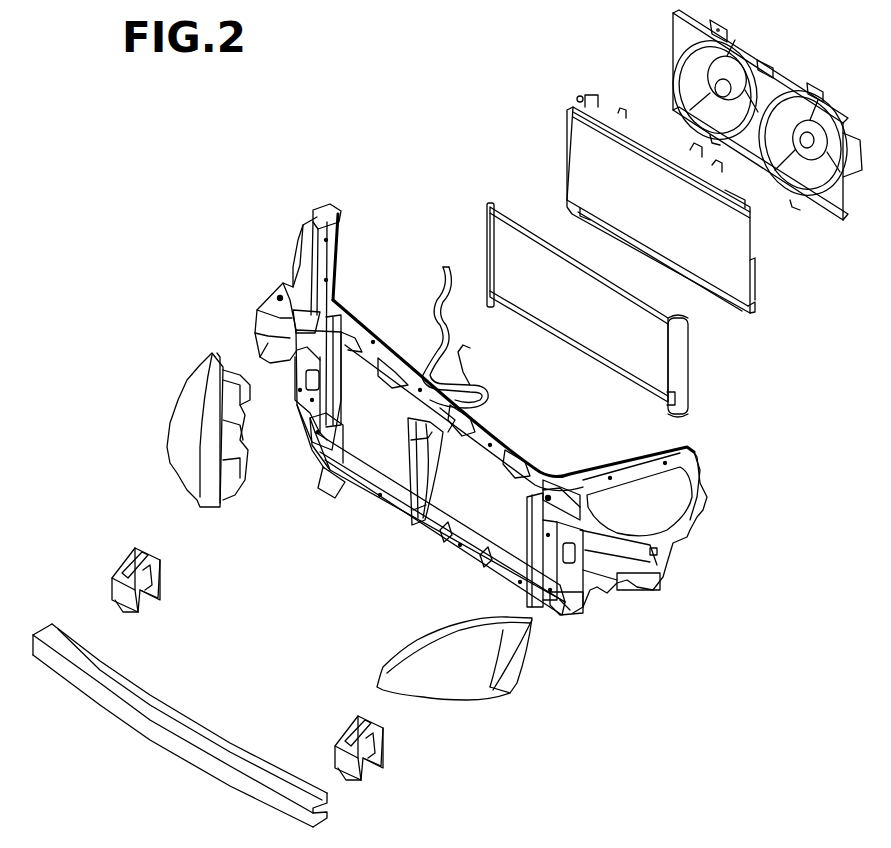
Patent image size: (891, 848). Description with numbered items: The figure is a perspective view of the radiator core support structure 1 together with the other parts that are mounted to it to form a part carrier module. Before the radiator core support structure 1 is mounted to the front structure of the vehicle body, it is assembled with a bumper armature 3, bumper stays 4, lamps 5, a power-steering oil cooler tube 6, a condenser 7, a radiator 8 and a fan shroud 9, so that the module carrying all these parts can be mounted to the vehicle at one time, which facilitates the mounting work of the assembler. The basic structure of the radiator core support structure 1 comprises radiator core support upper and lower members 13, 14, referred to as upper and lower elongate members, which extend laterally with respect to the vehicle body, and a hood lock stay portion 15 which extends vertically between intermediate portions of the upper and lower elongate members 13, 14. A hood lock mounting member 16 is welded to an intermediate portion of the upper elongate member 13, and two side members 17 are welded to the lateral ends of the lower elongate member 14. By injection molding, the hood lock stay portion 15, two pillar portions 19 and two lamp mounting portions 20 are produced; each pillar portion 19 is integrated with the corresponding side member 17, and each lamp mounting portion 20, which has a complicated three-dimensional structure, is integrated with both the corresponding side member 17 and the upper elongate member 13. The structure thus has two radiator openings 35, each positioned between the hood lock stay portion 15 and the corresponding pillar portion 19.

The radiator core support structure 1 is at (282, 228).
The bumper armature 3 is at (190, 715).
The bumper stays 4 is at (122, 560).
The lamps 5 is at (172, 408).
The power-steering oil cooler tube 6 is at (480, 383).
The condenser 7 is at (487, 247).
The radiator 8 is at (577, 158).
The fan shroud 9 is at (670, 60).
The radiator core support upper member 13 is at (508, 448).
The radiator core support lower member 14 is at (455, 535).
The hood lock stay portion 15 is at (418, 487).
The hood lock mounting member 16 is at (455, 418).
The side members 17 is at (303, 395).
The pillar portions 19 is at (345, 400).
The lamp mounting portions 20 is at (283, 285).
The radiator openings 35 is at (396, 449).